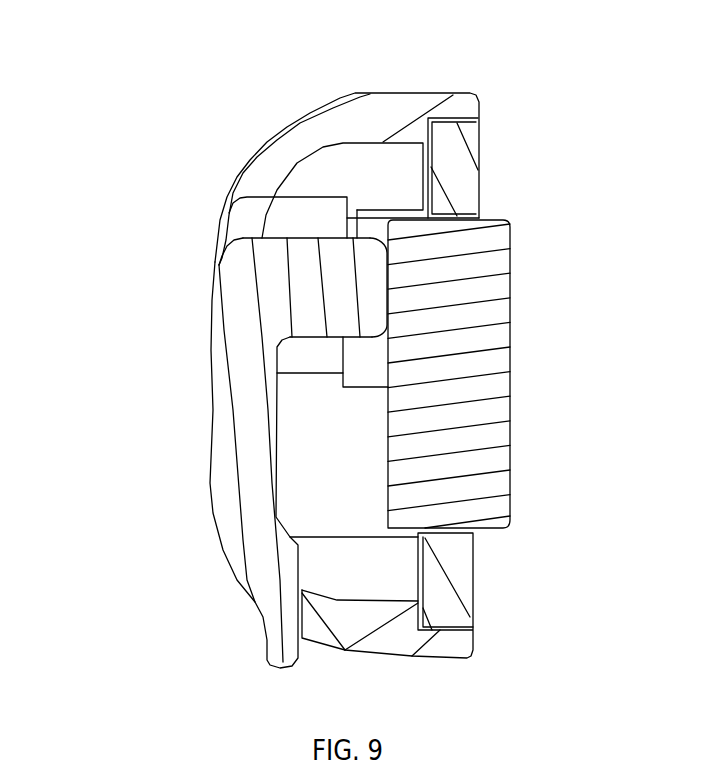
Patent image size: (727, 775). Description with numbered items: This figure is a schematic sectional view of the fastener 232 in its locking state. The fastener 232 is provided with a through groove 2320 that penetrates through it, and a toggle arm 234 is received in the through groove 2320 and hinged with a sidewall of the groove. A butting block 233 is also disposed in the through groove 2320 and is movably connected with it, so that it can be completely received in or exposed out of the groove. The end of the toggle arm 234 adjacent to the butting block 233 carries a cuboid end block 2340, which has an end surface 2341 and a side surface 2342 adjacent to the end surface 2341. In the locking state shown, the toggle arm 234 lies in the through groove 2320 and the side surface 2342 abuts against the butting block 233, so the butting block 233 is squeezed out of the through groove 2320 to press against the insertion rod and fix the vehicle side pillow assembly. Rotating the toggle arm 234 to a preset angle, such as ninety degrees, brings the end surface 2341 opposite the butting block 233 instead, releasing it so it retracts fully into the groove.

The fastener 232 is at (258, 177).
The through groove 2320 is at (358, 629).
The butting block 233 is at (525, 374).
The toggle arm 234 is at (184, 453).
The end block 2340 is at (237, 292).
The end surface 2341 is at (348, 132).
The side surface 2342 is at (498, 247).